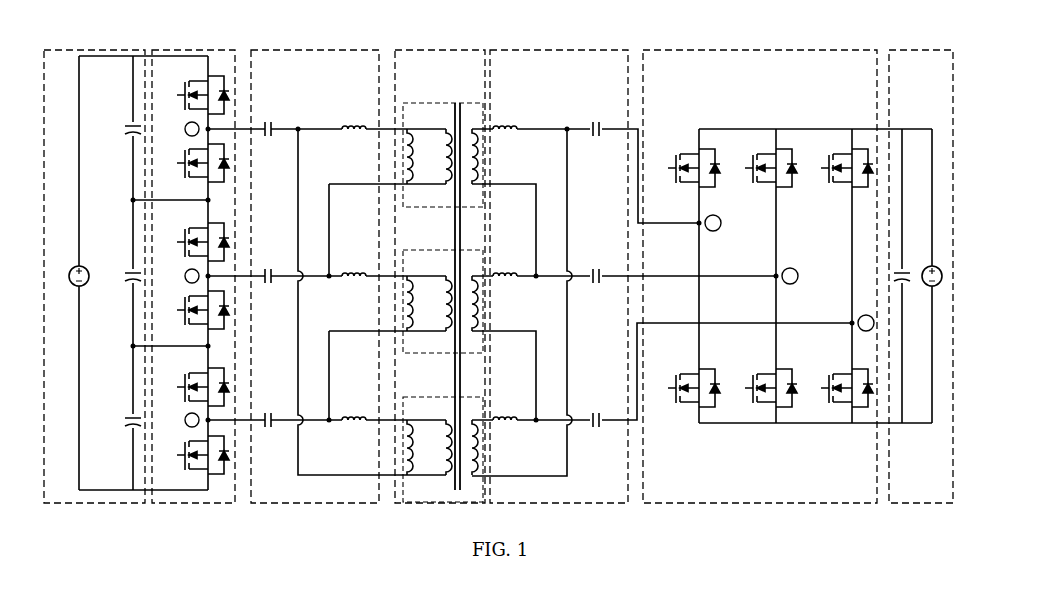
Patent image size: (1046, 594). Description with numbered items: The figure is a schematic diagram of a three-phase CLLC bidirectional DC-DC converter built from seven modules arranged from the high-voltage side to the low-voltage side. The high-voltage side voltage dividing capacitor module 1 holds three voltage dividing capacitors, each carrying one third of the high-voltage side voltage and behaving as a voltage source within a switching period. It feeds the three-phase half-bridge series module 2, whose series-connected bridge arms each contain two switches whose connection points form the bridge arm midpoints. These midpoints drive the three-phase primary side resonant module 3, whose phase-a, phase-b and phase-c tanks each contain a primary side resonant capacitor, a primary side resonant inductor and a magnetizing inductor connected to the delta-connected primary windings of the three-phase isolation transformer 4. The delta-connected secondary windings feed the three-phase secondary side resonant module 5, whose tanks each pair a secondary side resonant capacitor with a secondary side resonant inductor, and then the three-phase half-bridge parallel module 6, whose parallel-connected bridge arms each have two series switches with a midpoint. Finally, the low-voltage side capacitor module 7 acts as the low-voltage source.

The high-voltage side voltage dividing capacitor module 1 is at (107, 50).
The three-phase half-bridge series module 2 is at (188, 50).
The three-phase primary side resonant module 3 is at (307, 50).
The three-phase isolation transformer 4 is at (445, 50).
The three-phase secondary side resonant module 5 is at (563, 50).
The three-phase half-bridge parallel module 6 is at (753, 50).
The low-voltage side capacitor module 7 is at (907, 50).